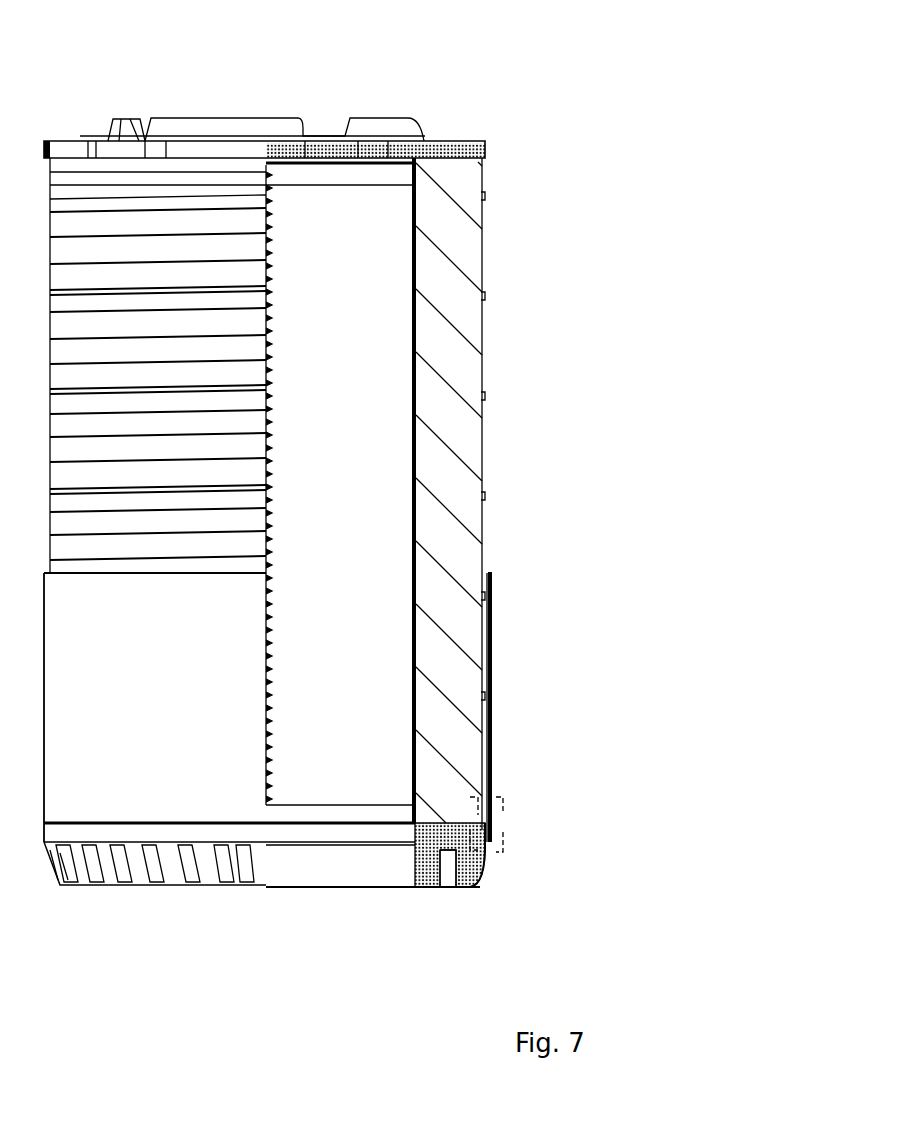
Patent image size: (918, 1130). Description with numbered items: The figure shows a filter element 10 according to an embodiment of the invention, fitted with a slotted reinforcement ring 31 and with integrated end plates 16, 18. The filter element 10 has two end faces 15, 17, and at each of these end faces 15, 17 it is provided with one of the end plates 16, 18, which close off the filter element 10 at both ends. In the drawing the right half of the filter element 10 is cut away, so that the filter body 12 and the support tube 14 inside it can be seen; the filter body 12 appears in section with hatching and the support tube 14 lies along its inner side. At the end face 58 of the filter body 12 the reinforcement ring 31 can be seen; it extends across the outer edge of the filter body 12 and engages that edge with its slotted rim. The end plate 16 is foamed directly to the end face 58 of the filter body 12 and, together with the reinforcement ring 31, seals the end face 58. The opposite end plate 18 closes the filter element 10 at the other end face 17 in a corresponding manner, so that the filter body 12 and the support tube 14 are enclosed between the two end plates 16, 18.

The filter element 10 is at (527, 112).
The filter body 12 is at (465, 428).
The support tube 14 is at (415, 512).
The end face 15 is at (345, 892).
The end plate 16 is at (322, 895).
The end face 17 is at (72, 141).
The end plate 18 is at (325, 133).
The slotted reinforcement ring 31 is at (498, 822).
The end face of the filter body 58 is at (478, 890).